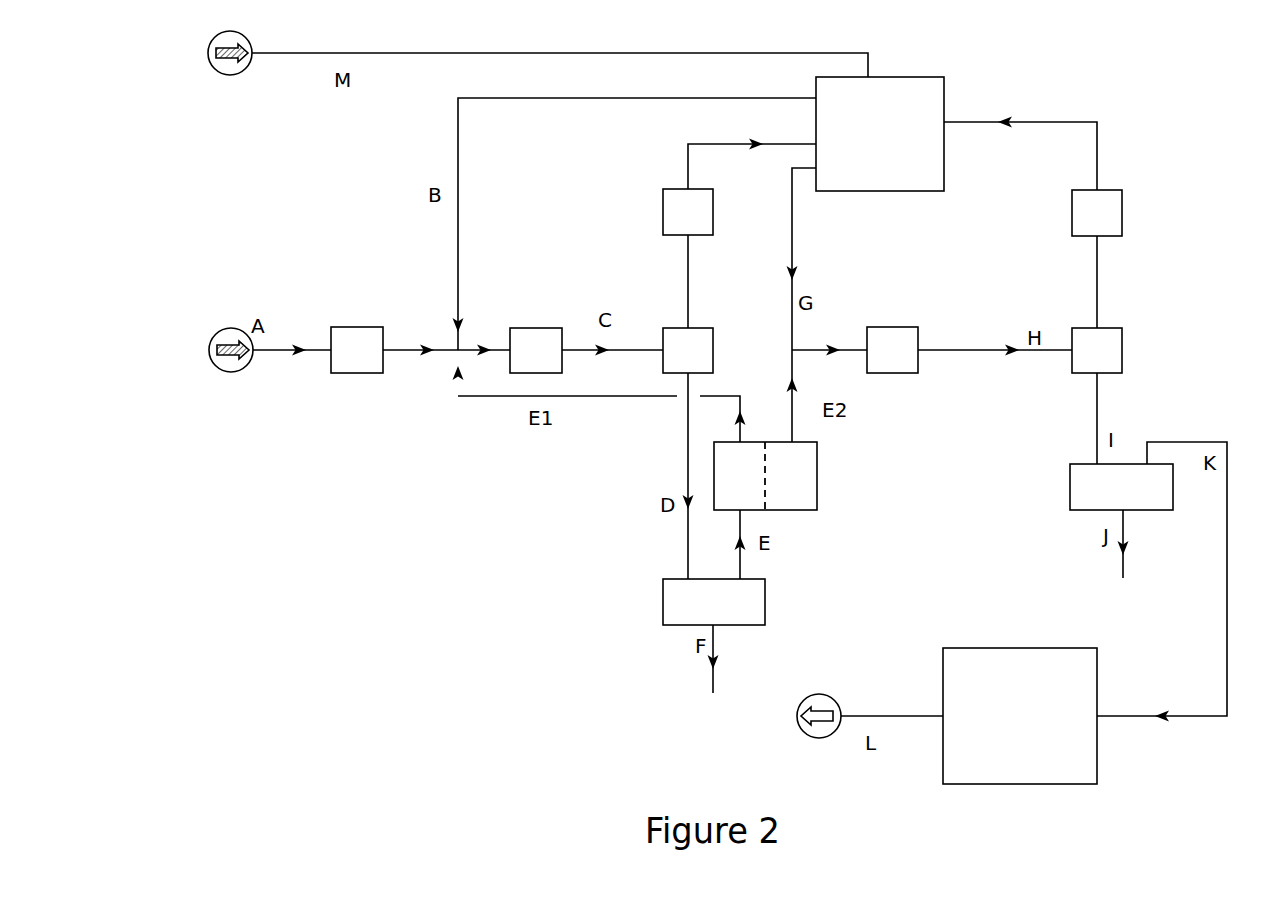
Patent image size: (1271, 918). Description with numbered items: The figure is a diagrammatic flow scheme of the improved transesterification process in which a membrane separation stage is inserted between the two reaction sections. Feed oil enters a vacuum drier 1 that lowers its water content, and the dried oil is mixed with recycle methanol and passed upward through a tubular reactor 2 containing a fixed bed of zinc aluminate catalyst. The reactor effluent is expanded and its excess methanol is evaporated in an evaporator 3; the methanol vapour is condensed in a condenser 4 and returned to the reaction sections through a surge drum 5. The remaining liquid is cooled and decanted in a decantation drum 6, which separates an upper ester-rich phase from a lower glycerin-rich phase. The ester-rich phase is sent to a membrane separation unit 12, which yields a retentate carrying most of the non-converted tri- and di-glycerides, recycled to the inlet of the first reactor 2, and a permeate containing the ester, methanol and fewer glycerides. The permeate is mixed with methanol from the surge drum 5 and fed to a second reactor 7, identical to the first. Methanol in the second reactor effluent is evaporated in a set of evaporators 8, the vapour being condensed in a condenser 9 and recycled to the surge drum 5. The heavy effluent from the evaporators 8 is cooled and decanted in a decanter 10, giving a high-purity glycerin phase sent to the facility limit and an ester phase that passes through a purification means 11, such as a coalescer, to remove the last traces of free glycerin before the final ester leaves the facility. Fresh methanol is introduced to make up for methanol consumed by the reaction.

The vacuum drier 1 is at (358, 325).
The tubular reactor 2 is at (543, 318).
The evaporator 3 is at (697, 325).
The condenser 4 is at (662, 212).
The surge drum 5 is at (895, 73).
The decantation drum 6 is at (660, 599).
The second reactor 7 is at (896, 327).
The set of evaporators 8 is at (1122, 348).
The condenser 9 is at (1120, 213).
The decanter 10 is at (1073, 488).
The purification means 11 is at (940, 663).
The membrane separation unit 12 is at (813, 482).